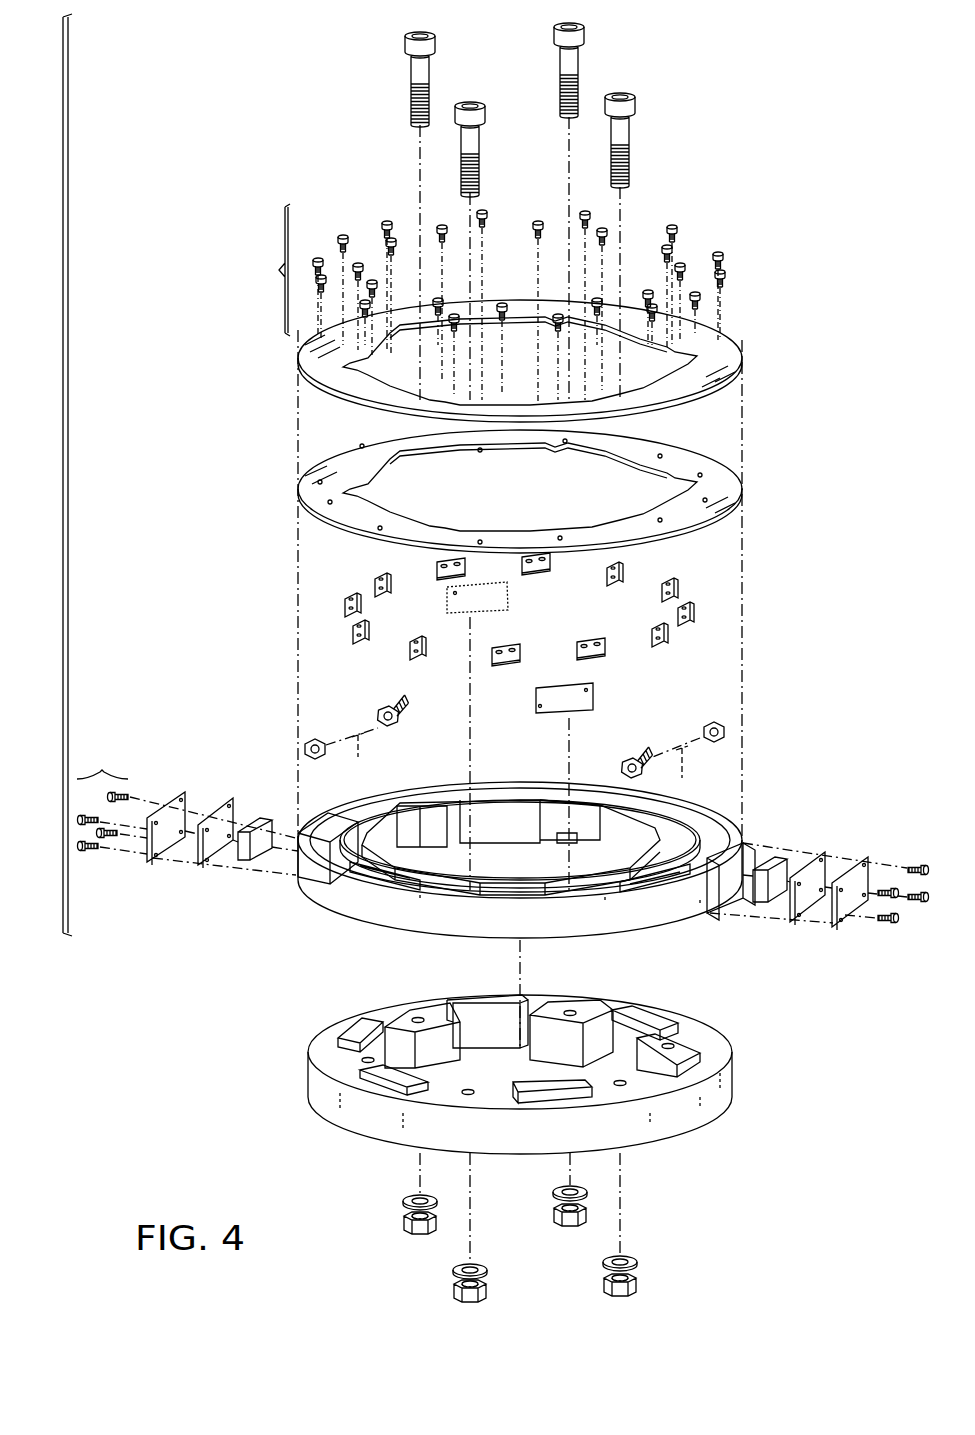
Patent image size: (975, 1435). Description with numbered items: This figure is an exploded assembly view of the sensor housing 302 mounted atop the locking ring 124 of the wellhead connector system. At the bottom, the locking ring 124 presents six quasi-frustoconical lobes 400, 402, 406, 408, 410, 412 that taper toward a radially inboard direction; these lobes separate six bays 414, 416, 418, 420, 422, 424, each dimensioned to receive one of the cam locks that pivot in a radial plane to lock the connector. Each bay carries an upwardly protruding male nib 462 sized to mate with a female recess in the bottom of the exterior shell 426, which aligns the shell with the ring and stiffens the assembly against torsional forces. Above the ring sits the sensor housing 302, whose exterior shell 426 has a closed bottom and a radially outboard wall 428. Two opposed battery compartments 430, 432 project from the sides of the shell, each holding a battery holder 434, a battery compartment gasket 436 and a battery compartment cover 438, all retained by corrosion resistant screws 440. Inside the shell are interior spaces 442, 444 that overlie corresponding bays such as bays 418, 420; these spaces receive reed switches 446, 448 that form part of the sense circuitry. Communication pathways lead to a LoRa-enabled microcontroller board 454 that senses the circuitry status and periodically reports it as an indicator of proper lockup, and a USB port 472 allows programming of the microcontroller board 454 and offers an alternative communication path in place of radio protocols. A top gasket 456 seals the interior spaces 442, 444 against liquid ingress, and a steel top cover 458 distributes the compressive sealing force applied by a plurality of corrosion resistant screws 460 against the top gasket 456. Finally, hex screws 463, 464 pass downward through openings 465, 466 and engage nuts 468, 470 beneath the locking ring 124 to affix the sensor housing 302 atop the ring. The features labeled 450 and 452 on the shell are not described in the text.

The sensor housing 302 is at (63, 470).
The hex screw 463 is at (470, 100).
The hex screw 464 is at (583, 60).
The corrosion resistant screws 460 is at (477, 304).
The steel top cover 458 is at (735, 345).
The top gasket 456 is at (345, 538).
The reed switch 446 is at (686, 580).
The reed switch 448 is at (552, 567).
The microcontroller board 454 is at (595, 690).
The USB port 472 is at (640, 760).
The interior space 442 is at (600, 781).
The interior space 444 is at (521, 781).
The inner wall 450 is at (455, 786).
The inner opening 452 is at (602, 866).
The exterior shell 426 is at (326, 900).
The radially outboard wall 428 is at (663, 913).
The battery compartment 430 is at (743, 848).
The battery compartment 432 is at (293, 863).
The battery holder 434 is at (266, 817).
The battery compartment gasket 436 is at (215, 812).
The battery compartment cover 438 is at (148, 852).
The corrosion resistant screws 440 is at (102, 757).
The lobe 400 is at (420, 1090).
The lobe 402 is at (680, 1113).
The locking ring 124 is at (731, 1073).
The lobe 406 is at (693, 1037).
The lobe 408 is at (600, 1007).
The lobe 410 is at (400, 1012).
The lobe 412 is at (327, 1047).
The bay 414 is at (520, 1087).
The bay 416 is at (698, 1083).
The bay 418 is at (647, 1032).
The bay 420 is at (487, 1020).
The bay 422 is at (357, 1030).
The bay 424 is at (327, 1073).
The male nib 462 is at (604, 1090).
The opening 465 is at (418, 1017).
The opening 466 is at (569, 1010).
The nut 468 is at (403, 1218).
The nut 470 is at (567, 1226).